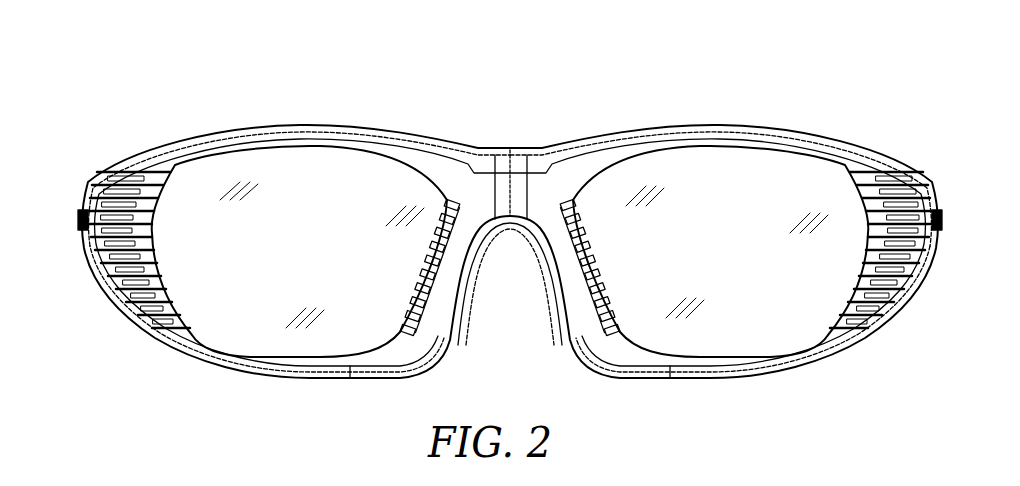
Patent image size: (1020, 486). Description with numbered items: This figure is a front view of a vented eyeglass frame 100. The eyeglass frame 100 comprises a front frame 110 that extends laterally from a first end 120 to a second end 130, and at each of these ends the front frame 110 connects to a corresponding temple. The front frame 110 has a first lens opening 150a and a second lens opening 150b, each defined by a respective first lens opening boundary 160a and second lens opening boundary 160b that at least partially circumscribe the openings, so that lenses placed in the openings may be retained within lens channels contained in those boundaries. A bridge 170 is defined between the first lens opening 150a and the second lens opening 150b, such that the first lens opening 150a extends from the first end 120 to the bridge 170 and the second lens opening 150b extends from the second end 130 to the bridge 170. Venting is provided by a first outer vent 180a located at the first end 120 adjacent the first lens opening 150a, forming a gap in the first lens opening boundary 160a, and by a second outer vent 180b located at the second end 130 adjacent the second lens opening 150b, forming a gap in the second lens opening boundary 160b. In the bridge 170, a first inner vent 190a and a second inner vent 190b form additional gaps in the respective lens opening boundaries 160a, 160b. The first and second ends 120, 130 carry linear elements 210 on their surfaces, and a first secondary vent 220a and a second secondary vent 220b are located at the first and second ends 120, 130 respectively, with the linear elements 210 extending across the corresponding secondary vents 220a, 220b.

The eyeglass frame 100 is at (757, 64).
The front frame 110 is at (650, 132).
The first end 120 is at (97, 273).
The second end 130 is at (920, 273).
The first lens opening 150a is at (257, 310).
The second lens opening 150b is at (722, 310).
The first lens opening boundary 160a is at (305, 378).
The second lens opening boundary 160b is at (790, 372).
The bridge 170 is at (538, 160).
The first outer vent 180a is at (157, 223).
The second outer vent 180b is at (855, 197).
The first inner vent 190a is at (447, 213).
The second inner vent 190b is at (590, 270).
The linear elements 210 is at (126, 187).
The first secondary vent 220a is at (122, 233).
The second secondary vent 220b is at (903, 215).